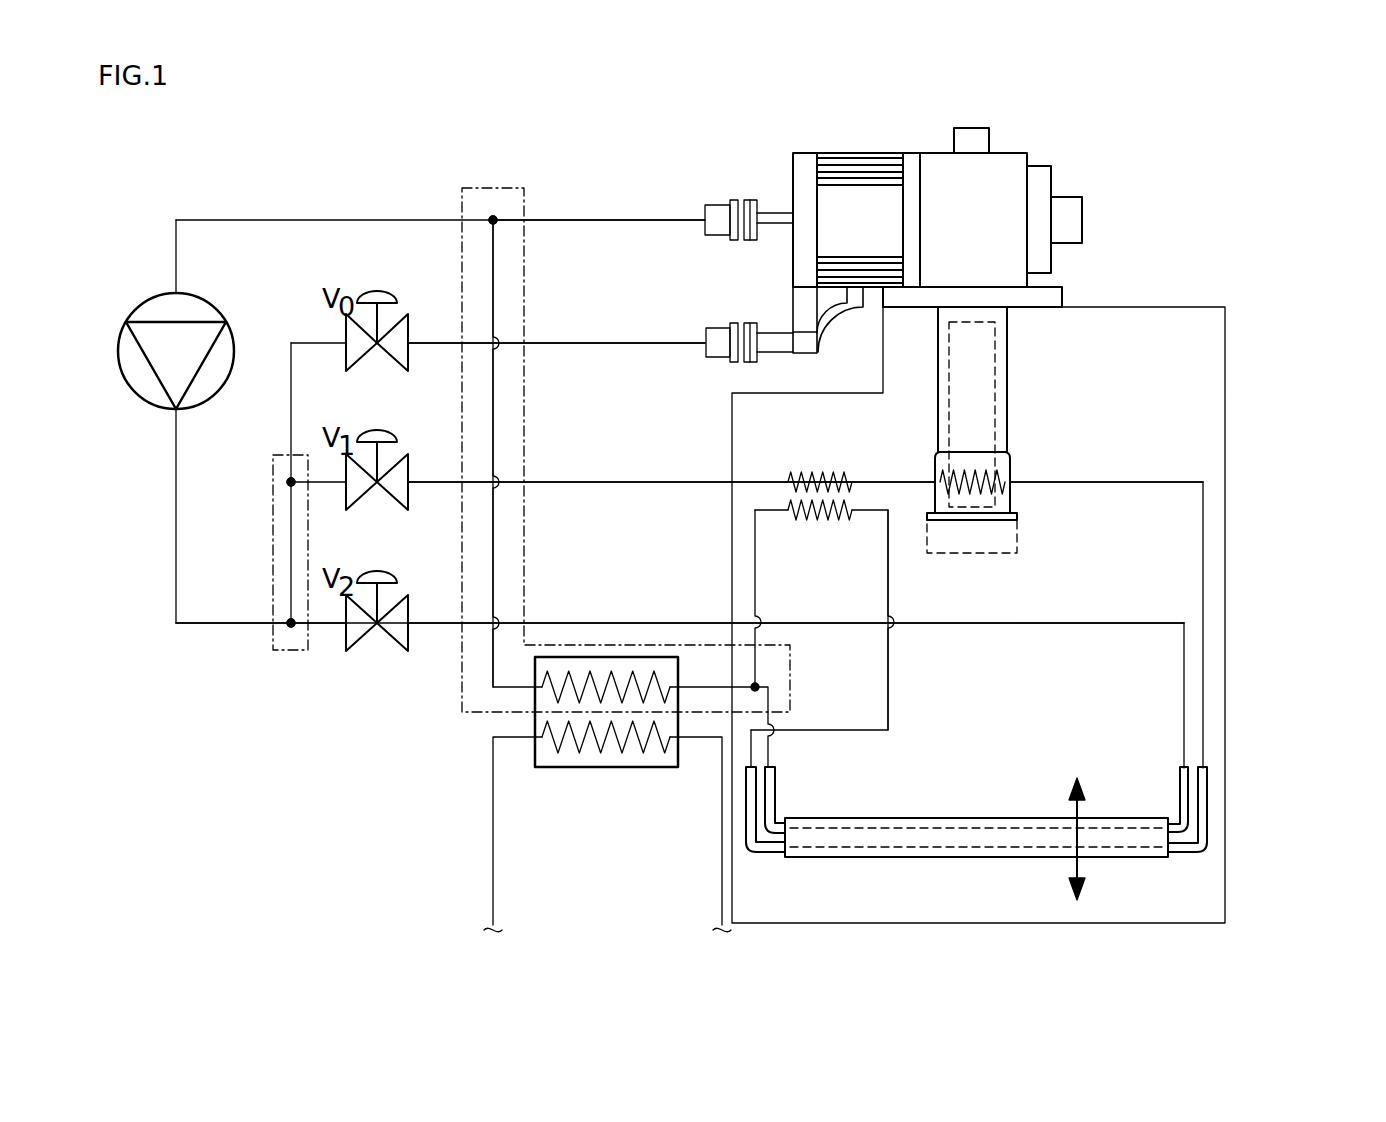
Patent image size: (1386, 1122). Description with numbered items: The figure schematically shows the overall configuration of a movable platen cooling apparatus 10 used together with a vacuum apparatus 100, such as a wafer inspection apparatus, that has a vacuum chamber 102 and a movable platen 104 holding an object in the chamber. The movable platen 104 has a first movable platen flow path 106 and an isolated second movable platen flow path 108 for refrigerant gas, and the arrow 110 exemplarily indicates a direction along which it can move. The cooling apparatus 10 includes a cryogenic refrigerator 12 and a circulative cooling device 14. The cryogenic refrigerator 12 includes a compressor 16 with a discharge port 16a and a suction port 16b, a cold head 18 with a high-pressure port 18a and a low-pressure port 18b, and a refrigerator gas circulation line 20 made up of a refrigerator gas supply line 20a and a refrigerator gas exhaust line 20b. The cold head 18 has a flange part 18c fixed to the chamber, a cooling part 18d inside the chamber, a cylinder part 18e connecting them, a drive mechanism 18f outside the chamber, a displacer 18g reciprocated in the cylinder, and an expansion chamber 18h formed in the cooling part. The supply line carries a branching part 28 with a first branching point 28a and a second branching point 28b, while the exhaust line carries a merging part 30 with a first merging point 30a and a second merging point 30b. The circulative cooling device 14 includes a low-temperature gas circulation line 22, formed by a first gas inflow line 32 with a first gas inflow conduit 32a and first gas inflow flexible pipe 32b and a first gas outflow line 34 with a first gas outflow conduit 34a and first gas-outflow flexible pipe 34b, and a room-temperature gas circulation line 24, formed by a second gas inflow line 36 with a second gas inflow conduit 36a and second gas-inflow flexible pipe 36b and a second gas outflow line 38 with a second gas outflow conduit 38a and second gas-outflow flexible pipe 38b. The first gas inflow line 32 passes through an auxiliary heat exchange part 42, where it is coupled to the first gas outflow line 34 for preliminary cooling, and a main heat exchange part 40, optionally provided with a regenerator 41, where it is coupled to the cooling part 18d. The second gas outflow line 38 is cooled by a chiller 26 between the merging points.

The movable platen cooling apparatus 10 is at (718, 977).
The cryogenic refrigerator 12 is at (408, 100).
The circulative cooling device 14 is at (1170, 474).
The compressor 16 is at (207, 298).
The discharge port 16a is at (175, 413).
The suction port 16b is at (175, 292).
The cold head 18 is at (803, 152).
The high-pressure port 18a is at (720, 325).
The low-pressure port 18b is at (720, 200).
The flange part 18c is at (1063, 298).
The cooling part 18d is at (1012, 495).
The cylinder part 18e is at (1007, 348).
The drive mechanism 18f is at (1007, 152).
The displacer 18g is at (995, 388).
The expansion chamber 18h is at (995, 470).
The refrigerator gas circulation line 20 is at (590, 242).
The refrigerator gas supply line 20a is at (673, 340).
The refrigerator gas exhaust line 20b is at (673, 222).
The low-temperature gas circulation line 22 is at (588, 380).
The room-temperature gas circulation line 24 is at (620, 522).
The chiller 26 is at (560, 768).
The branching part 28 is at (276, 652).
The first branching point 28a is at (291, 482).
The second branching point 28b is at (291, 623).
The merging part 30 is at (460, 672).
The first merging point 30a is at (755, 687).
The second merging point 30b is at (493, 220).
The first gas inflow line 32 is at (643, 482).
The first gas inflow conduit 32a is at (1203, 590).
The first gas inflow flexible pipe 32b is at (1207, 790).
The first gas outflow line 34 is at (752, 528).
The first gas outflow conduit 34a is at (888, 690).
The first gas-outflow flexible pipe 34b is at (746, 808).
The second gas inflow line 36 is at (575, 620).
The second gas inflow conduit 36a is at (1184, 680).
The second gas-inflow flexible pipe 36b is at (1180, 783).
The second gas outflow line 38 is at (497, 520).
The second gas outflow conduit 38a is at (770, 748).
The second gas-outflow flexible pipe 38b is at (775, 788).
The main heat exchange part 40 is at (960, 493).
The regenerator 41 is at (1017, 540).
The auxiliary heat exchange part 42 is at (816, 472).
The vacuum apparatus 100 is at (1303, 838).
The vacuum chamber 102 is at (1225, 855).
The movable platen 104 is at (1143, 860).
The first movable platen flow path 106 is at (905, 850).
The second movable platen flow path 108 is at (835, 829).
The arrow 110 is at (1072, 866).